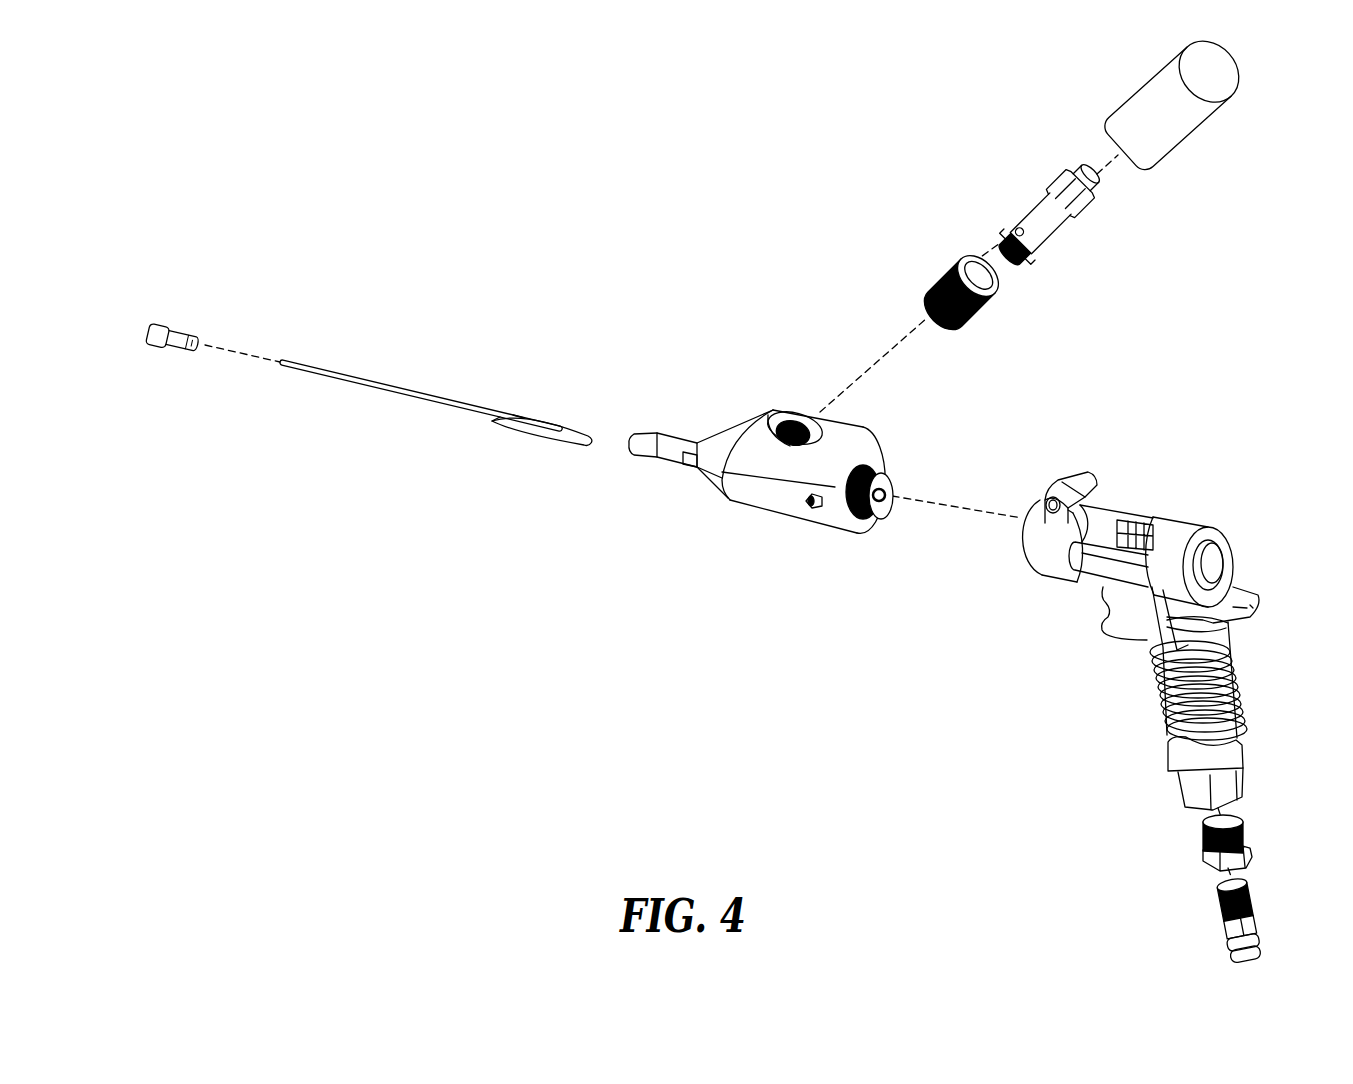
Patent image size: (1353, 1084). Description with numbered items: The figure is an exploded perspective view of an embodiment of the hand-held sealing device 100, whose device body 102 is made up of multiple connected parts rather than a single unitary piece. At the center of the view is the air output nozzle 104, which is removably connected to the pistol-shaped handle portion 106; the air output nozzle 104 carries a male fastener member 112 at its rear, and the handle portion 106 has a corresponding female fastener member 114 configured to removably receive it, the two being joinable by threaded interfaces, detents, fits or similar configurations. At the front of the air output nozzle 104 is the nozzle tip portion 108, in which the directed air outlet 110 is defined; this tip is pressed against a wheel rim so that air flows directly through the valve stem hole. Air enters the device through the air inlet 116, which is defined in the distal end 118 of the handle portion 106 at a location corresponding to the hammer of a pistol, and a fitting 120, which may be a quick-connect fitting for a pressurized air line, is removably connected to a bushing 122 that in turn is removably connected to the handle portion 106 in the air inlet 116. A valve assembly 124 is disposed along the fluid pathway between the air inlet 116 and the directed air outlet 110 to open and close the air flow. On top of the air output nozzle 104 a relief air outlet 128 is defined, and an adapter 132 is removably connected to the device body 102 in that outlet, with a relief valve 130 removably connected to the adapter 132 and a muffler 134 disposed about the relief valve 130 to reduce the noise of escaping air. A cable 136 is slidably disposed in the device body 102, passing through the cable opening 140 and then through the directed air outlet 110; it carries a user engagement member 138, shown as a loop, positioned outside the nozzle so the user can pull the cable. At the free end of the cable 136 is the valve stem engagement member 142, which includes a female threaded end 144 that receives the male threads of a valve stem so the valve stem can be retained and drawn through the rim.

The hand-held sealing device 100 is at (657, 198).
The device body 102 is at (960, 660).
The air output nozzle 104 is at (745, 502).
The handle portion 106 is at (1188, 518).
The nozzle tip portion 108 is at (677, 435).
The directed air outlet 110 is at (625, 438).
The male fastener member 112 is at (888, 518).
The female fastener member 114 is at (1020, 512).
The air inlet 116 is at (1242, 803).
The distal end 118 is at (1247, 767).
The fitting 120 is at (1256, 913).
The bushing 122 is at (1203, 845).
The valve assembly 124 is at (1128, 628).
The relief air outlet 128 is at (796, 424).
The relief valve 130 is at (1032, 208).
The adapter 132 is at (958, 260).
The muffler 134 is at (1141, 92).
The cable 136 is at (417, 396).
The user engagement member 138 is at (567, 441).
The cable opening 140 is at (810, 506).
The valve stem engagement member 142 is at (169, 326).
The female threaded end 144 is at (148, 322).